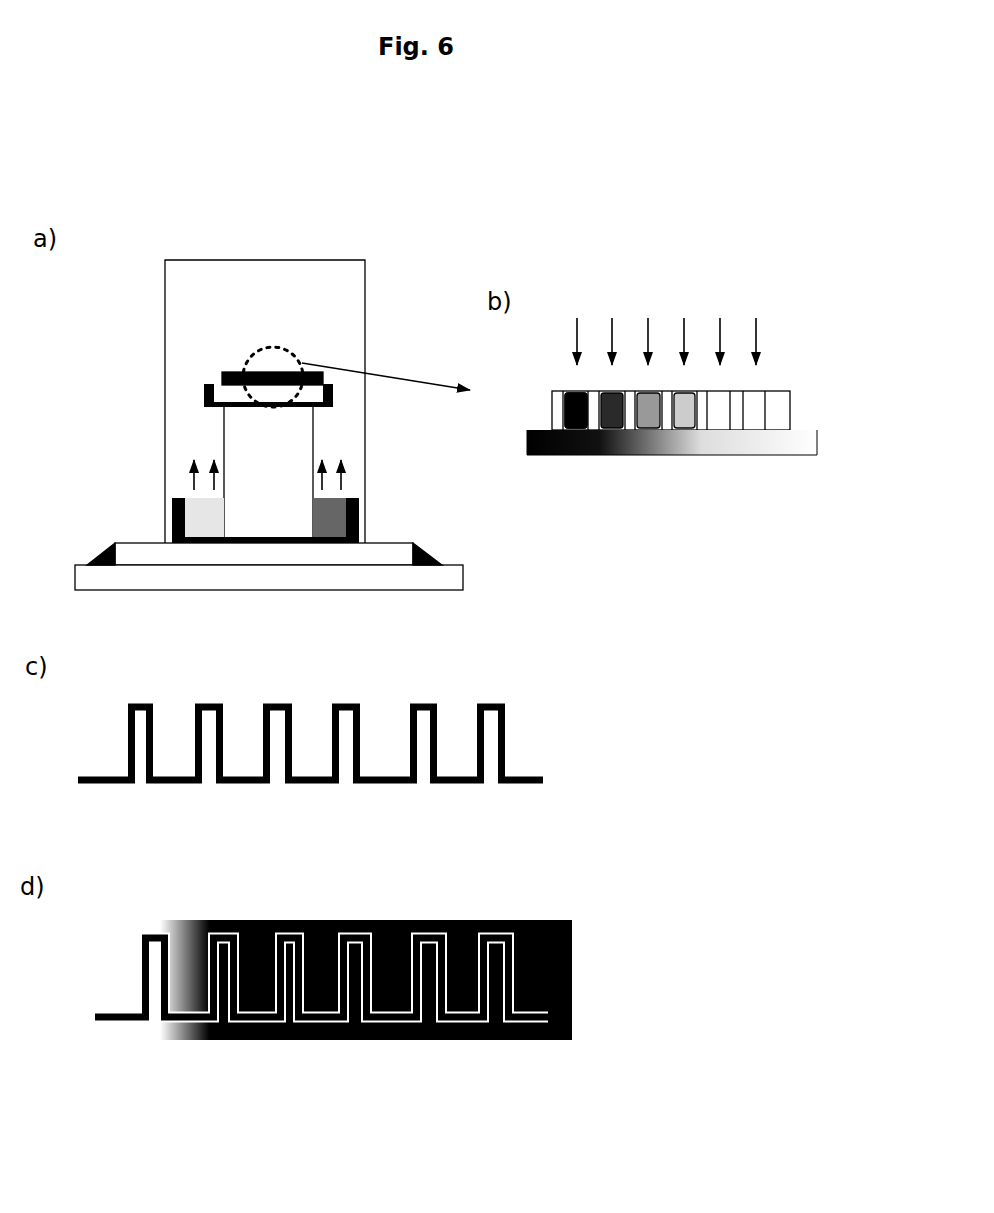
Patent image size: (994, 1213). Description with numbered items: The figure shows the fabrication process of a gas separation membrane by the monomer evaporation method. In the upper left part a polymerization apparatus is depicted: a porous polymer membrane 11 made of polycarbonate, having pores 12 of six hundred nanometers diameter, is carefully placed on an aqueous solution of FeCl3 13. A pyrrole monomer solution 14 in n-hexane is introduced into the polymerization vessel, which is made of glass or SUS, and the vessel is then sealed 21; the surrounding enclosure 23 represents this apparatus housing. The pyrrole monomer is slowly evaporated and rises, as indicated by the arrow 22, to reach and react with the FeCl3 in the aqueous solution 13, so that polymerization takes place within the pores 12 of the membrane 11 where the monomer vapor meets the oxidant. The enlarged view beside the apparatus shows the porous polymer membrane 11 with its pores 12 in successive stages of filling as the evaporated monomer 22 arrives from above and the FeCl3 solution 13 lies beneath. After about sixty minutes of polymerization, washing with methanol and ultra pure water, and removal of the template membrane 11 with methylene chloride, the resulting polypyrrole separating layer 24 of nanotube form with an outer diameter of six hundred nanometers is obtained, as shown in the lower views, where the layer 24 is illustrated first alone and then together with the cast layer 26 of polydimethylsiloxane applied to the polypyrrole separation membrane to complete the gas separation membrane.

The porous polymer membrane 11 is at (215, 373).
The pores 12 is at (573, 412).
The aqueous solution of FeCl3 13 is at (223, 396).
The pyrrole monomer solution 14 is at (195, 518).
The sealed polymerization vessel 21 is at (84, 553).
The arrow 22 is at (185, 474).
The vacuum chamber 23 is at (165, 302).
The separating layer 24 is at (120, 745).
The deposited layer 26 is at (535, 970).